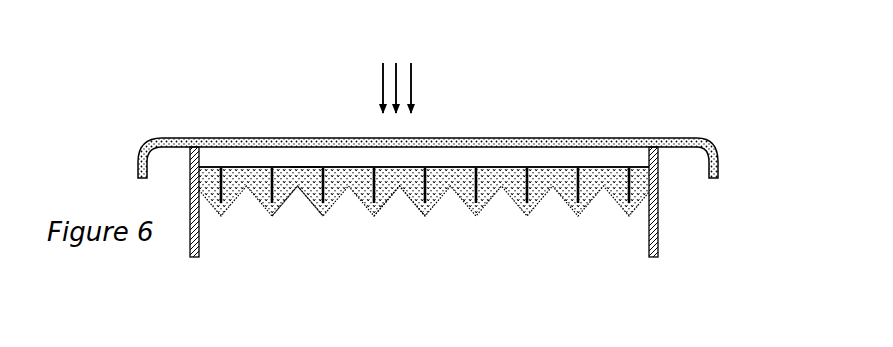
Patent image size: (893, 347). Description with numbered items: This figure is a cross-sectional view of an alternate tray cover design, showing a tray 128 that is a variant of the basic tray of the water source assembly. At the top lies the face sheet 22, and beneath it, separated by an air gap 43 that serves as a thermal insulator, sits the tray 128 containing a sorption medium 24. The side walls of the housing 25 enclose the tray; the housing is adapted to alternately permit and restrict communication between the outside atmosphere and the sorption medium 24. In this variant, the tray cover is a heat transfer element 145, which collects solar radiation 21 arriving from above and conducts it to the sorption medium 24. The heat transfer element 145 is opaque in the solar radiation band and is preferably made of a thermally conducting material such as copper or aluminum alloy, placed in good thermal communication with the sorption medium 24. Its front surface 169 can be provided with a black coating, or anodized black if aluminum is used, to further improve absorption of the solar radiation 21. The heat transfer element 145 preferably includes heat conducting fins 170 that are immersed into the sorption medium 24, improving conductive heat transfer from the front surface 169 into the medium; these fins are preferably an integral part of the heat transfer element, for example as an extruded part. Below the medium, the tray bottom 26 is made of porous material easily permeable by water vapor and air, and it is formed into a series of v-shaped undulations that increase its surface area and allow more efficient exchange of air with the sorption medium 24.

The face sheet 22 is at (596, 138).
The solar radiation 21 is at (411, 90).
The air gap 43 is at (551, 166).
The heat transfer element 145 is at (283, 160).
The front surface 169 is at (303, 168).
The sorption medium 24 is at (353, 180).
The tray bottom 26 is at (483, 208).
The tray 128 is at (392, 205).
The heat conducting fins 170 is at (314, 190).
The housing 25 is at (664, 219).